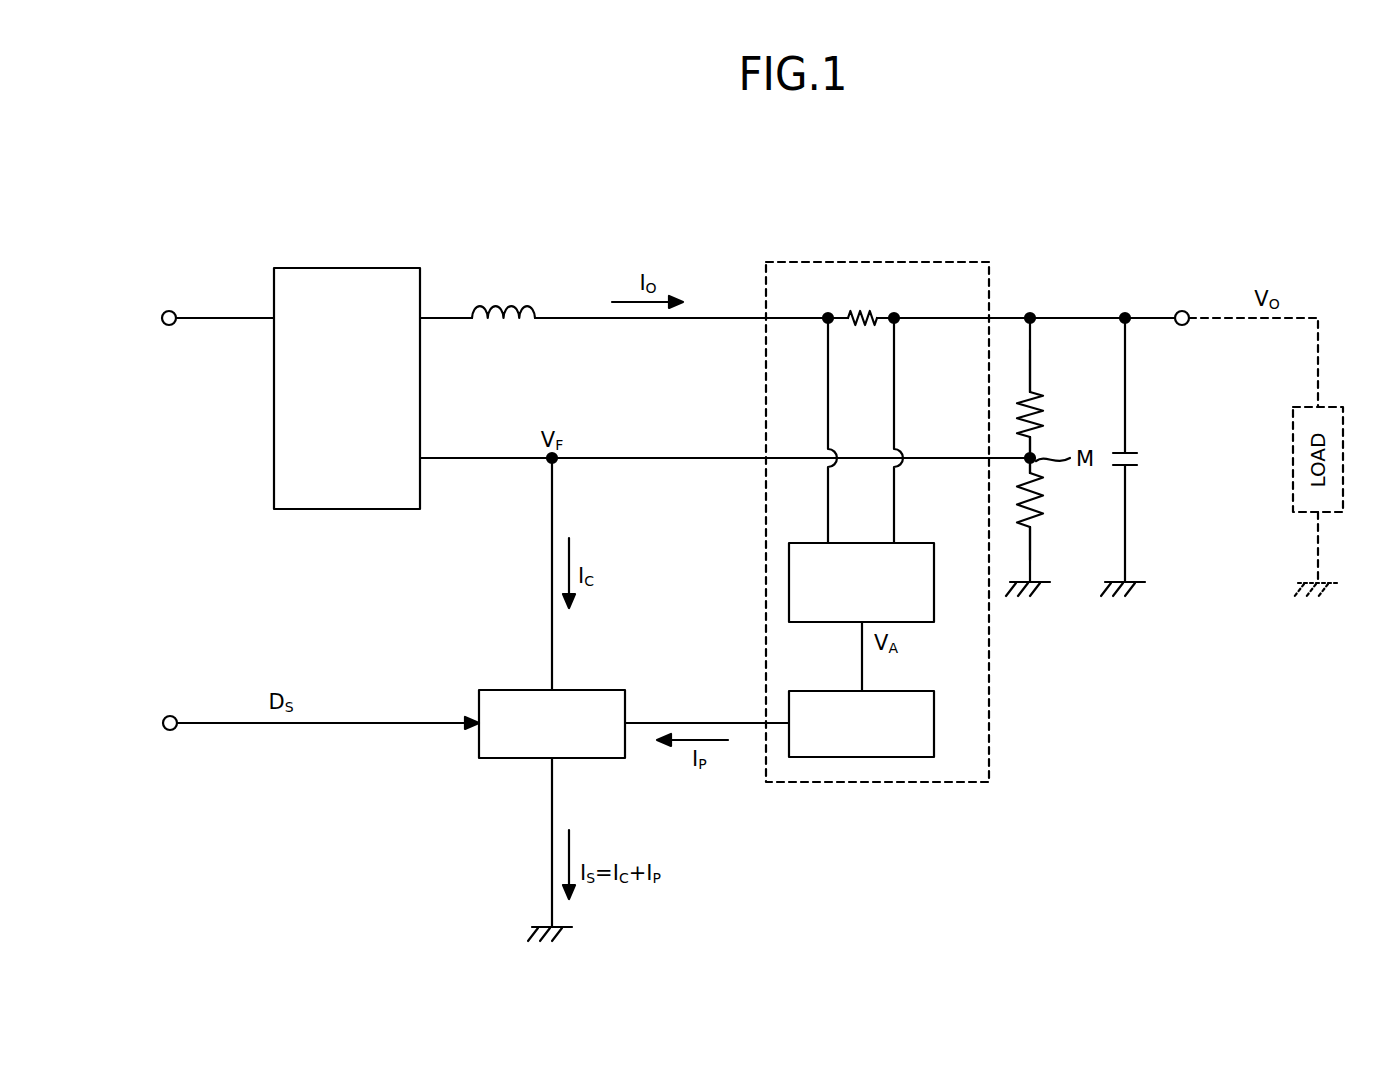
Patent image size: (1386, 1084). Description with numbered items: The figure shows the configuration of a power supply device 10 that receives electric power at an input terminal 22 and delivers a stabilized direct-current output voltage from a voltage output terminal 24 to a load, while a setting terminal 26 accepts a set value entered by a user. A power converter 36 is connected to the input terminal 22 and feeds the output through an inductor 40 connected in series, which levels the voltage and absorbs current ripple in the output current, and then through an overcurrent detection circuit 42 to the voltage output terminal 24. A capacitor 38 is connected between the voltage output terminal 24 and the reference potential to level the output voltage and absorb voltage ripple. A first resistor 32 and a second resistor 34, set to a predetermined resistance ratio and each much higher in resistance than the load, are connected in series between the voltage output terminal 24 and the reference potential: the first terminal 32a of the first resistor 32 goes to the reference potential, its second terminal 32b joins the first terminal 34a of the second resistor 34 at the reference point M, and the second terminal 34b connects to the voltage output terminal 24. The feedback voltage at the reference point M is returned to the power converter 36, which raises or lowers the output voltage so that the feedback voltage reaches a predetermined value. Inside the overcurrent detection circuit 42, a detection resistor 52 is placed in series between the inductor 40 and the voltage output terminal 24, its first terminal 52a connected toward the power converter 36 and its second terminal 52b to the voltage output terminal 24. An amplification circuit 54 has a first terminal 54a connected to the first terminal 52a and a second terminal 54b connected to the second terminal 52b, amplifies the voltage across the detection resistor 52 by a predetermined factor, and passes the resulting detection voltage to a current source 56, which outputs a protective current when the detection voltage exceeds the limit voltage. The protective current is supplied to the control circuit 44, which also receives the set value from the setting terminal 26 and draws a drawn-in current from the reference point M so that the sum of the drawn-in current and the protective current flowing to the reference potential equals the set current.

The power supply device 10 is at (687, 194).
The input terminal 22 is at (170, 311).
The voltage output terminal 24 is at (1182, 311).
The setting terminal 26 is at (171, 716).
The first resistor 32 is at (1040, 505).
The first terminal of first resistor 32a is at (1030, 535).
The second terminal of first resistor 32b is at (1036, 476).
The second resistor 34 is at (1036, 399).
The first terminal of second resistor 34a is at (1030, 447).
The second terminal of second resistor 34b is at (1030, 367).
The power converter 36 is at (350, 268).
The capacitor 38 is at (1137, 458).
The inductor 40 is at (507, 305).
The overcurrent detection circuit 42 is at (968, 262).
The control circuit 44 is at (590, 690).
The detection resistor 52 is at (866, 310).
The first terminal of detection resistor 52a is at (836, 312).
The second terminal of detection resistor 52b is at (882, 312).
The amplification circuit 54 is at (920, 543).
The first terminal of amplification circuit 54a is at (826, 541).
The second terminal of amplification circuit 54b is at (896, 541).
The current source 56 is at (906, 691).